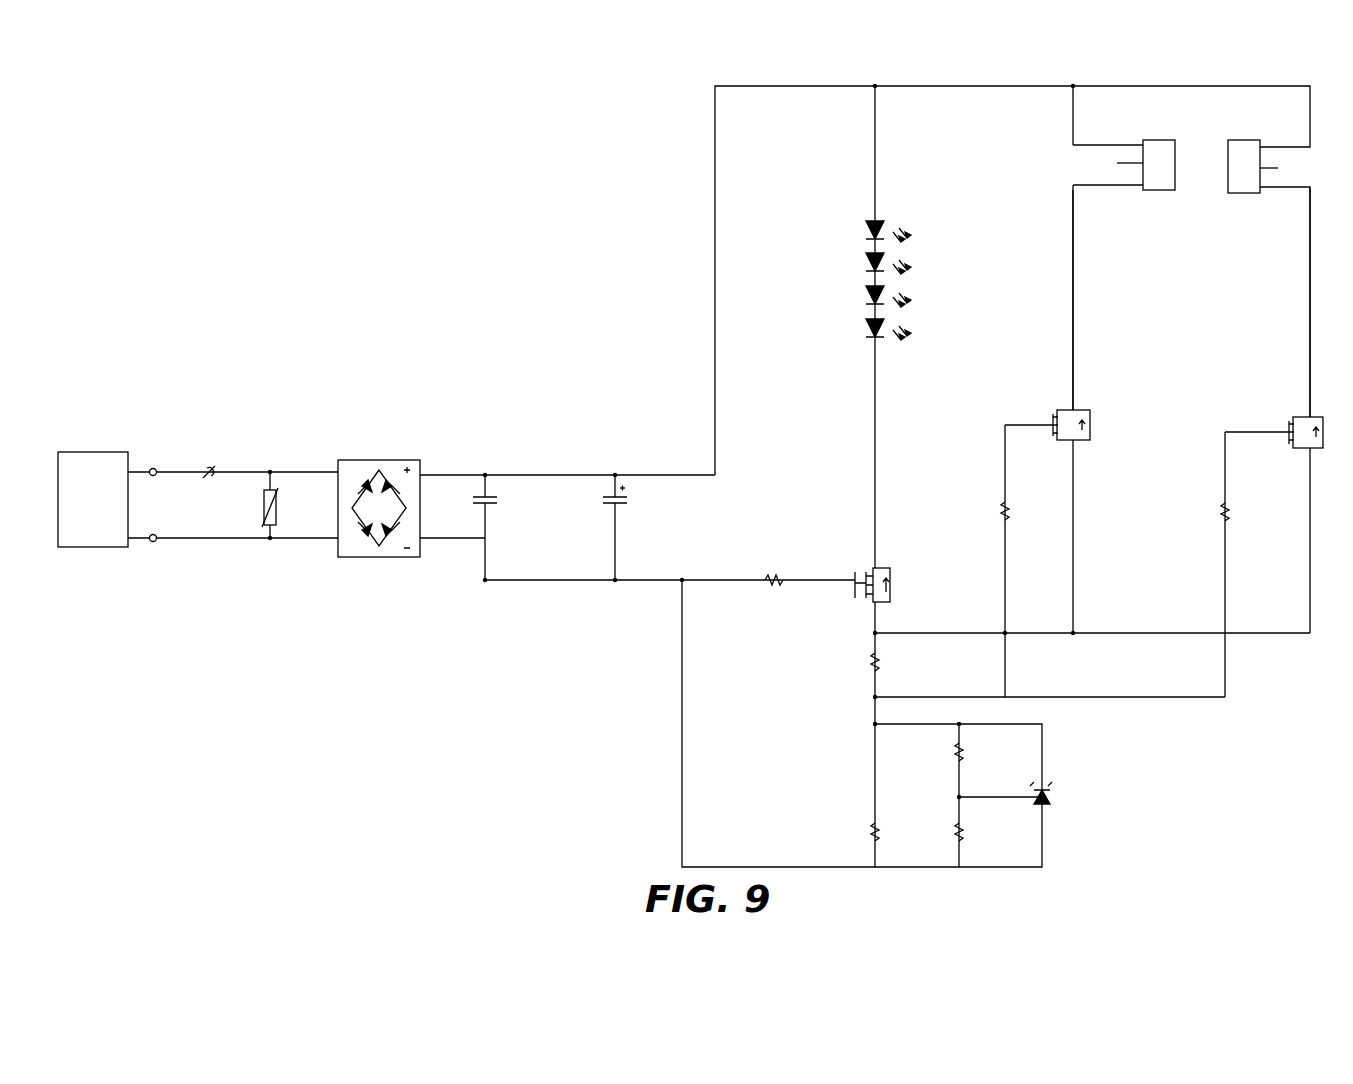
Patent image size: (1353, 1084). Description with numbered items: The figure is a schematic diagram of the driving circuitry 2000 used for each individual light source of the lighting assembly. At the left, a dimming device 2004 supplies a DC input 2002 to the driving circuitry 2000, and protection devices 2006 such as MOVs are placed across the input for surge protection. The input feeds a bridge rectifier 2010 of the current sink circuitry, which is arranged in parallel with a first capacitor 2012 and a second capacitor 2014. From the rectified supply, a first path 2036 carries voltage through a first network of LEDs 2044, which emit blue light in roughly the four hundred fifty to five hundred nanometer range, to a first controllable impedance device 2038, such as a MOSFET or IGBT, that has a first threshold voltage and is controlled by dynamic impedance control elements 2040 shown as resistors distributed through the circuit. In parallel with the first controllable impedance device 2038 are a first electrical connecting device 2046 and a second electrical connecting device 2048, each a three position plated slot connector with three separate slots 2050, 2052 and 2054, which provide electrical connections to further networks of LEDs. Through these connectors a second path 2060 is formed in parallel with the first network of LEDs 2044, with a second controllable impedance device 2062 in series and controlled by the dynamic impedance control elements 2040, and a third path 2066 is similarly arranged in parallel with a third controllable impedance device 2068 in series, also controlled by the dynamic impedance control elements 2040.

The driving circuitry 2000 is at (447, 262).
The DC input 2002 is at (168, 456).
The dimming device 2004 is at (90, 548).
The protection devices 2006 is at (275, 500).
The bridge rectifier 2010 is at (395, 460).
The first capacitor 2012 is at (490, 505).
The second capacitor 2014 is at (620, 505).
The first path 2036 is at (880, 160).
The first controllable impedance device 2038 is at (890, 575).
The dynamic impedance control elements 2040 is at (775, 578).
The first network of LEDs 2044 is at (852, 292).
The first electrical connecting device 2046 is at (1183, 127).
The second electrical connecting device 2048 is at (1243, 140).
The first slot 2050 is at (1141, 145).
The second slot 2052 is at (1118, 164).
The third slot 2054 is at (1147, 190).
The second path 2060 is at (1073, 330).
The second controllable impedance device 2062 is at (1078, 410).
The third path 2066 is at (1308, 316).
The third controllable impedance device 2068 is at (1296, 418).